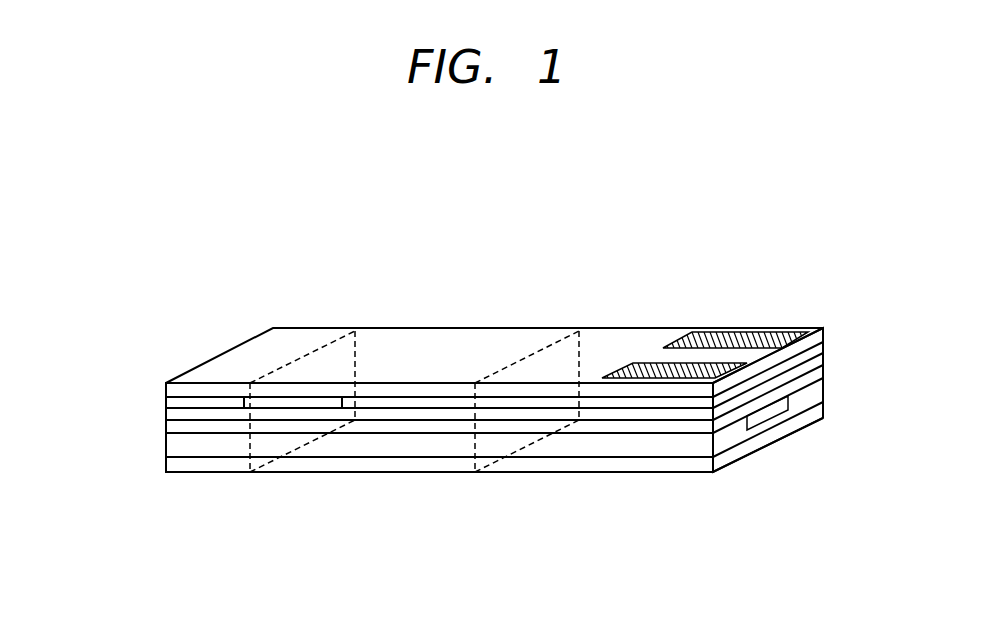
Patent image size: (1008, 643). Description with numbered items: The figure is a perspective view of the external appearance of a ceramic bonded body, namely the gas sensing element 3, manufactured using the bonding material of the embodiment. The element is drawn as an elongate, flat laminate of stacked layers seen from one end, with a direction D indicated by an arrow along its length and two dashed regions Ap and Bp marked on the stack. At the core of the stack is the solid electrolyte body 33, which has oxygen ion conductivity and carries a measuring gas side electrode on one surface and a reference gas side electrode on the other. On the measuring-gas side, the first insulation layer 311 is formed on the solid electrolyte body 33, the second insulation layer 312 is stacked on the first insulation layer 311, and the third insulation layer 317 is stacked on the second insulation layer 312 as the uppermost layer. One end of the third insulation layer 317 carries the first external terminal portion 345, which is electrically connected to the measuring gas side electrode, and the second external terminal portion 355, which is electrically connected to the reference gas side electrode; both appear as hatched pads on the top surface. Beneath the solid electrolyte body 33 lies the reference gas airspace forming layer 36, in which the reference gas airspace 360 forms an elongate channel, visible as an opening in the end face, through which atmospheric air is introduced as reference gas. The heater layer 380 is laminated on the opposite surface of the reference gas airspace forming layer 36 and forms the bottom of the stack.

The gas sensing element 3 is at (758, 204).
The third insulation layer 317 is at (203, 390).
The second insulation layer 312 is at (442, 405).
The first insulation layer 311 is at (375, 410).
The solid electrolyte body 33 is at (575, 425).
The reference gas airspace forming layer 36 is at (642, 443).
The heater layer 380 is at (367, 463).
The second external terminal portion 355 is at (652, 372).
The first external terminal portion 345 is at (767, 333).
The reference gas airspace 360 is at (768, 417).
The region Ap is at (310, 357).
The region Bp is at (532, 357).
The direction D is at (136, 390).